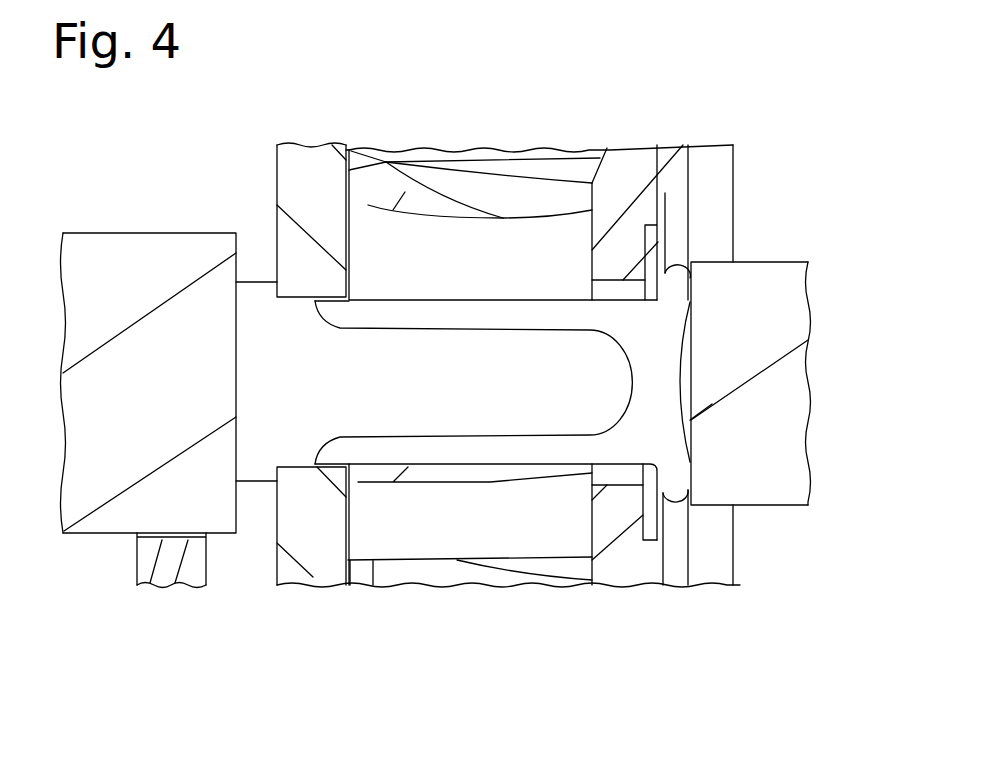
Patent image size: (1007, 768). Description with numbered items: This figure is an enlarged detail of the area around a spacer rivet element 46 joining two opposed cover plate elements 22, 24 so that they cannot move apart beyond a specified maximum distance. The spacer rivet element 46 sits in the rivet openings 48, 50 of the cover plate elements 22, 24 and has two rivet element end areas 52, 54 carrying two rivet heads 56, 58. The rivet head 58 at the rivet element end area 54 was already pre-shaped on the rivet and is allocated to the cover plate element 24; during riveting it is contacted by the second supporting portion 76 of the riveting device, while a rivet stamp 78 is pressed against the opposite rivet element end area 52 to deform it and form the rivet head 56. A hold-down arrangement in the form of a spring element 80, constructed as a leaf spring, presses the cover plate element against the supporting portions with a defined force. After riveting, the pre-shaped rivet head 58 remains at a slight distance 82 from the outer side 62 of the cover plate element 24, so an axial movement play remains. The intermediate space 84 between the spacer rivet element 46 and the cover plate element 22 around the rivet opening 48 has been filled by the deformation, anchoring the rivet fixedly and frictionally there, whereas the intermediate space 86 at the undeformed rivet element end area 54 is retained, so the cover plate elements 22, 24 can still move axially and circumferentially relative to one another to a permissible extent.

The cover plate element 22 is at (327, 550).
The cover plate element 24 is at (647, 555).
The spacer rivet element 46 is at (437, 418).
The rivet opening 48 is at (300, 468).
The rivet opening 50 is at (628, 486).
The rivet element end area 52 is at (285, 383).
The rivet element end area 54 is at (660, 442).
The rivet head 56 is at (253, 295).
The rivet head 58 is at (653, 257).
The outer side 62 is at (647, 523).
The second supporting portion 76 is at (762, 280).
The rivet stamp 78 is at (122, 517).
The spring element 80 is at (194, 578).
The distance 82 is at (688, 293).
The intermediate space 84 is at (320, 310).
The intermediate space 86 is at (615, 293).